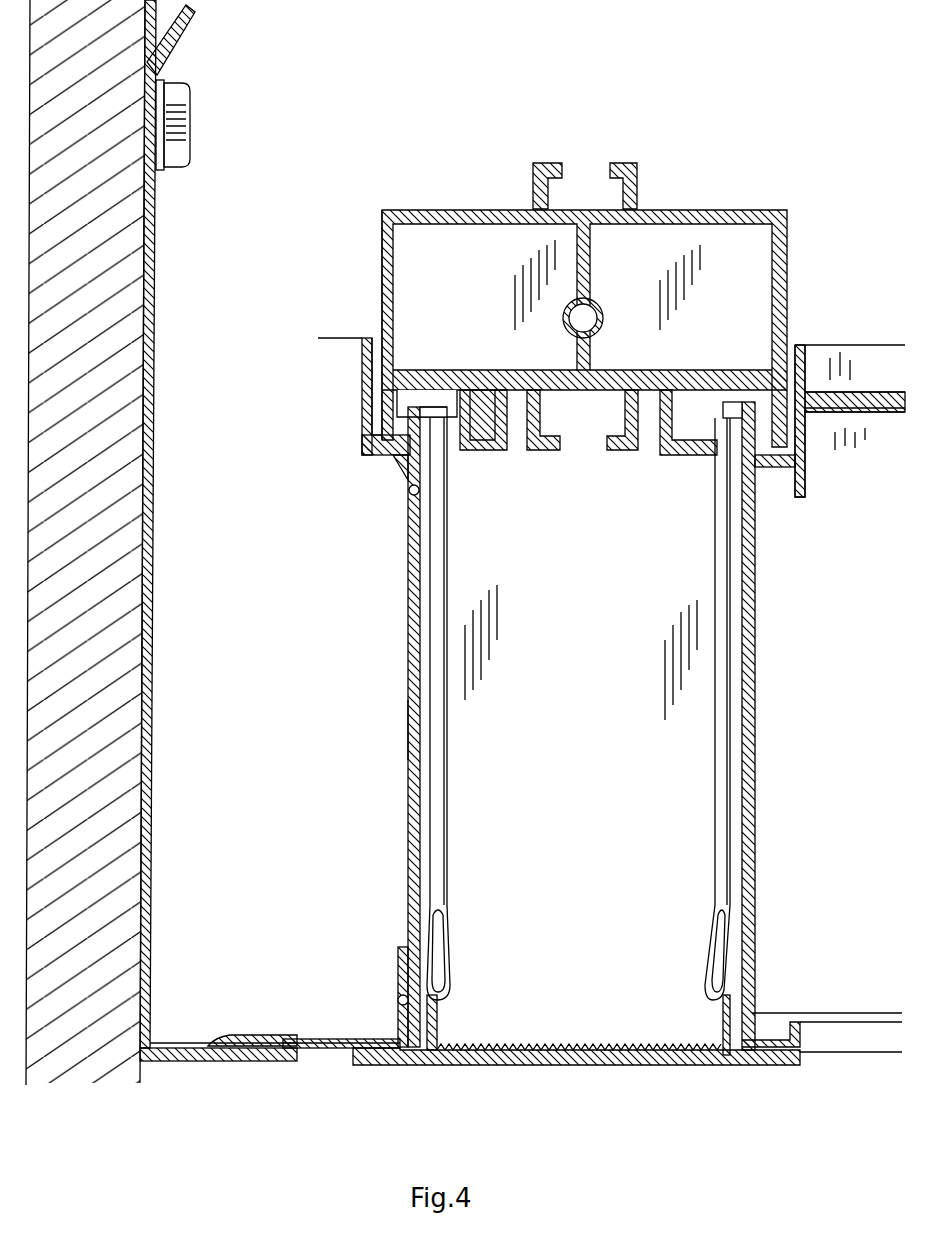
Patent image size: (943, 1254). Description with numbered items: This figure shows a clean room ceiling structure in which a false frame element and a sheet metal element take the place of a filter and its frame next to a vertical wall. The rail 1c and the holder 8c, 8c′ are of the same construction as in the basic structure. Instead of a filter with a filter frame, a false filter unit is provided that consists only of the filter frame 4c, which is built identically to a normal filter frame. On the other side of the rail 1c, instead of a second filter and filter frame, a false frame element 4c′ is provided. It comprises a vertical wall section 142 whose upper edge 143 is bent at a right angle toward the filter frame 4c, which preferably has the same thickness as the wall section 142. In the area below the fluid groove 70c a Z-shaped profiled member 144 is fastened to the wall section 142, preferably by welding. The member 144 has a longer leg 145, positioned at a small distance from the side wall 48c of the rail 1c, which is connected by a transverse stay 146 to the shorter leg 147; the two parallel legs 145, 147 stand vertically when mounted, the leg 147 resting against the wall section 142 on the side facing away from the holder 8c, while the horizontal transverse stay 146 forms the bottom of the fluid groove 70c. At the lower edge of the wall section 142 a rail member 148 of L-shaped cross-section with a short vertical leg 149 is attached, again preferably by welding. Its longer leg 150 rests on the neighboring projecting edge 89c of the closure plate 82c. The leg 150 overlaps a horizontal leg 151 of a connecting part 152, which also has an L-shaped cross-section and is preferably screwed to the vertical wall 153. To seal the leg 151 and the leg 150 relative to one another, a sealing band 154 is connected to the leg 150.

The rail 1c is at (795, 224).
The filter frame 4c is at (836, 336).
The false frame element 4c′ is at (400, 615).
The holder 8c is at (743, 583).
The holder 8c′ is at (430, 652).
The side wall 48c is at (382, 262).
The fluid groove 70c is at (358, 446).
The closure plate 82c is at (511, 1072).
The projecting edge 89c is at (370, 1067).
The vertical wall section 142 is at (408, 735).
The upper edge 143 is at (432, 405).
The Z-shaped profiled member 144 is at (352, 409).
The longer leg 145 is at (360, 357).
The transverse stay 146 is at (377, 455).
The shorter leg 147 is at (400, 522).
The rail member 148 is at (345, 1030).
The short vertical leg 149 is at (400, 955).
The longer leg 150 is at (288, 1040).
The horizontal leg 151 is at (233, 1062).
The connecting part 152 is at (150, 805).
The vertical wall 153 is at (125, 705).
The sealing band 154 is at (220, 1037).